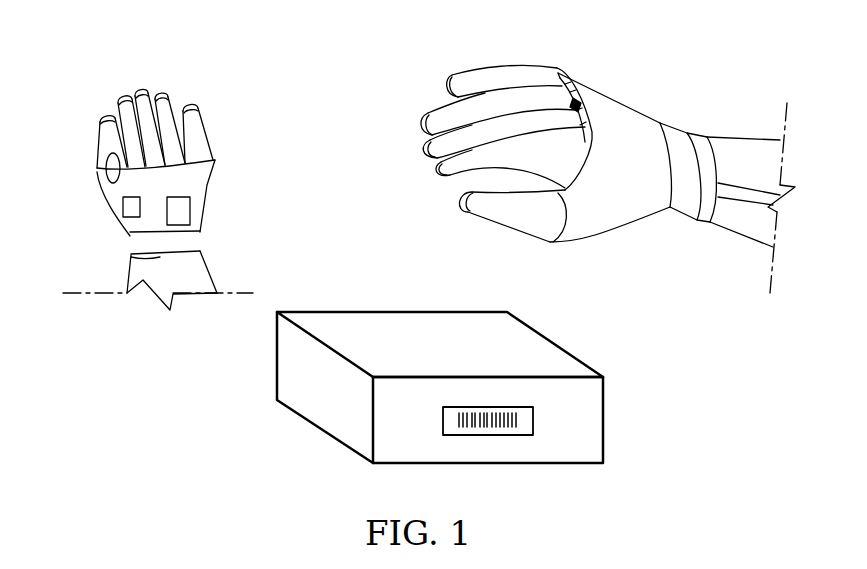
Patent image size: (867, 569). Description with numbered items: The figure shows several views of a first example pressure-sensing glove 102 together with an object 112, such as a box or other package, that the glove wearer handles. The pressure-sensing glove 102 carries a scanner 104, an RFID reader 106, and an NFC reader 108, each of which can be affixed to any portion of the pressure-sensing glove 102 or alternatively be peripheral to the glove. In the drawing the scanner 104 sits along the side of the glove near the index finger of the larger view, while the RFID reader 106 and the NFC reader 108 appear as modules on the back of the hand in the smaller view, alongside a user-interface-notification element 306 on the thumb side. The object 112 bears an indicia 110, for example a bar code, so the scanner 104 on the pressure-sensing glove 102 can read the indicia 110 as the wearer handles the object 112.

The pressure-sensing glove 102 is at (416, 162).
The scanner 104 is at (577, 95).
The RFID reader 106 is at (192, 212).
The NFC reader 108 is at (122, 210).
The indicia 110 is at (443, 420).
The object 112 is at (392, 311).
The user-interface-notification element 306 is at (98, 172).